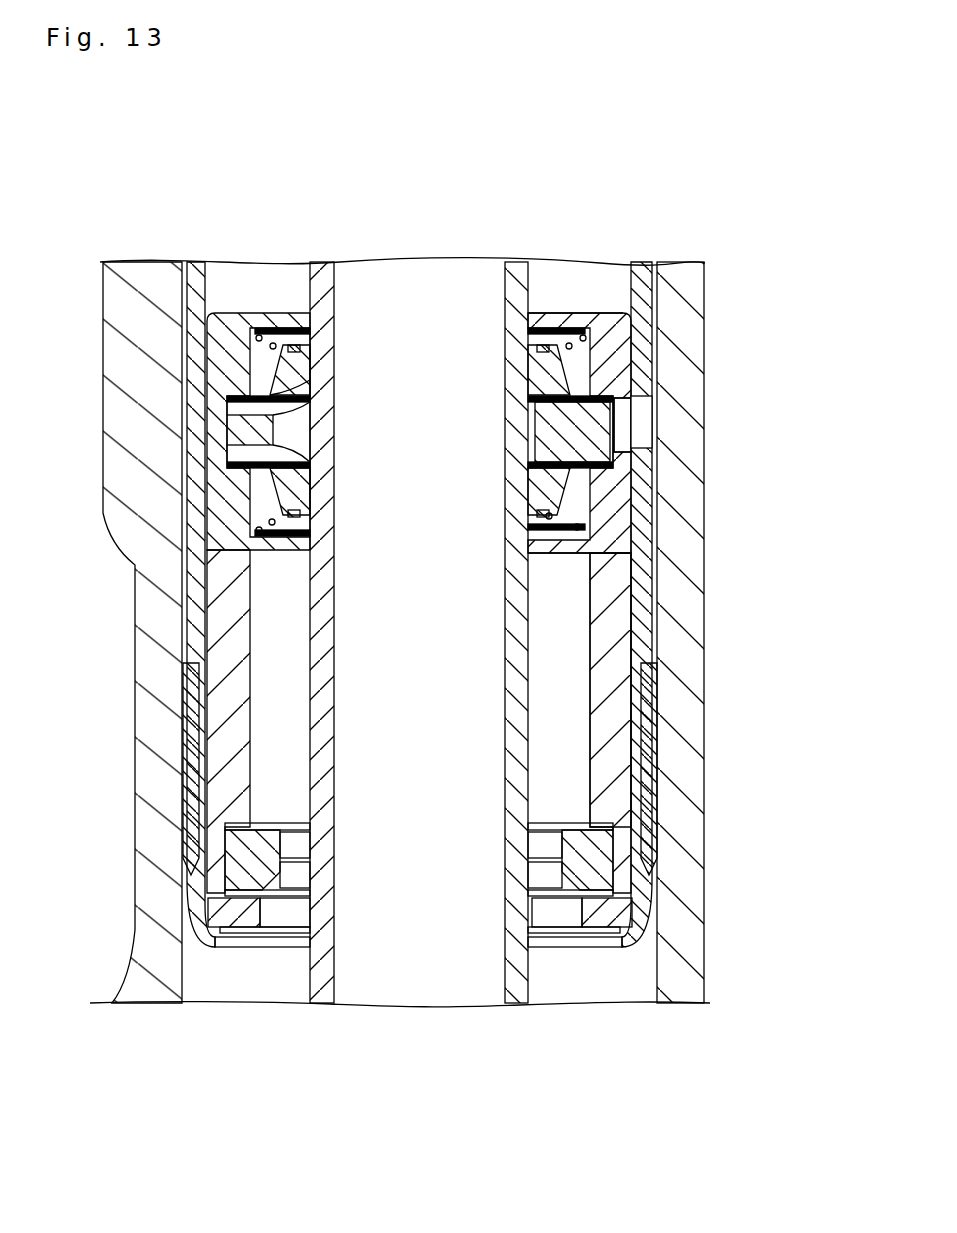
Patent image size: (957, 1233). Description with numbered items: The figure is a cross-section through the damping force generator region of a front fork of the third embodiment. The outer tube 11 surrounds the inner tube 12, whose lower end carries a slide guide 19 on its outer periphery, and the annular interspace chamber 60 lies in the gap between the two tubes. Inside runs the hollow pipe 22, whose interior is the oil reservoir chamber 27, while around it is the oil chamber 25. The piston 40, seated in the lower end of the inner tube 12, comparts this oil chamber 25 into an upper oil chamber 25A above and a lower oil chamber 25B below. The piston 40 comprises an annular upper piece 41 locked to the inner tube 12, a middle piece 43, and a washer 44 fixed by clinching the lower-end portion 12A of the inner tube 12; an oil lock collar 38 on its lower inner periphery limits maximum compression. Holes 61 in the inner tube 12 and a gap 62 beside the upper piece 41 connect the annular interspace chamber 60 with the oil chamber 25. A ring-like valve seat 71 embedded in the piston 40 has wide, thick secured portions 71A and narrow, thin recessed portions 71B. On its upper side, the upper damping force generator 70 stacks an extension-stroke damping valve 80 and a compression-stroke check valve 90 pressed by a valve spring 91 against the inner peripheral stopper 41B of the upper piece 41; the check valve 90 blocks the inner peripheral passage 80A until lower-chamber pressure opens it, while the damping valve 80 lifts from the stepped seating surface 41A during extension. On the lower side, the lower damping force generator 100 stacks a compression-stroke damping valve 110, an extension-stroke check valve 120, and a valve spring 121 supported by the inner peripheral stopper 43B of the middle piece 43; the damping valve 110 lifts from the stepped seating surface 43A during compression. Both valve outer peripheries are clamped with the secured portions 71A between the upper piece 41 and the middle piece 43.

The outer tube 11 is at (683, 280).
The inner tube 12 is at (640, 280).
The lower-end portion 12A is at (640, 944).
The slide guide 19 is at (650, 748).
The hollow pipe 22 is at (320, 282).
The oil chamber 25 is at (272, 278).
The upper oil chamber 25A is at (245, 282).
The lower oil chamber 25B is at (245, 975).
The oil reservoir chamber 27 is at (405, 283).
The oil lock collar 38 is at (600, 855).
The piston 40 is at (606, 617).
The upper piece 41 is at (617, 350).
The stepped seating surface 41A is at (656, 420).
The inner peripheral stopper 41B is at (547, 315).
The middle piece 43 is at (612, 505).
The stepped seating surface 43A is at (634, 460).
The inner peripheral stopper 43B is at (552, 558).
The washer 44 is at (610, 913).
The annular interspace chamber 60 is at (640, 540).
The holes 61 is at (643, 408).
The gap 62 is at (634, 437).
The upper damping force generator 70 is at (262, 316).
The valve seat 71 is at (228, 427).
The secured portion 71A is at (540, 431).
The recessed portion 71B is at (258, 444).
The extension-stroke damping valve 80 is at (292, 378).
The inner peripheral passage 80A is at (296, 380).
The compression-stroke check valve 90 is at (270, 347).
The valve spring 91 is at (262, 331).
The lower damping force generator 100 is at (245, 575).
The compression-stroke damping valve 110 is at (278, 485).
The extension-stroke check valve 120 is at (272, 517).
The valve spring 121 is at (262, 531).